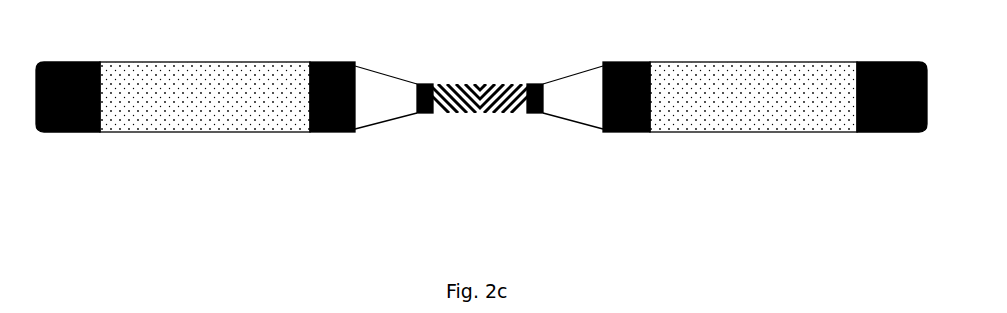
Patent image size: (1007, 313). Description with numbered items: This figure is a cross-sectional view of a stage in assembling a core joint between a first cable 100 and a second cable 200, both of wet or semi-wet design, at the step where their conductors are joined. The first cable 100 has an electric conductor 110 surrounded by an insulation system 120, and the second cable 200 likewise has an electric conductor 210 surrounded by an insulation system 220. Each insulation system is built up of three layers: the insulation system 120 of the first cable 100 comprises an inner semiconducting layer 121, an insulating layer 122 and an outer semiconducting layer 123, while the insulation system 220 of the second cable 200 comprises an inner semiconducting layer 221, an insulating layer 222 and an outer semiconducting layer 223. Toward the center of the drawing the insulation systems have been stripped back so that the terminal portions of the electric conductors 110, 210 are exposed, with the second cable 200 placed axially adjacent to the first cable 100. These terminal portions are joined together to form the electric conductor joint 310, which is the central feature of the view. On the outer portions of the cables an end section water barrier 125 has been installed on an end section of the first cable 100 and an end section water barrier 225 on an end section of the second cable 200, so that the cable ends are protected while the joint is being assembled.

The first cable 100 is at (171, 52).
The second cable 200 is at (807, 51).
The electric conductor joint 310 is at (430, 29).
The electric conductor 110 is at (453, 86).
The electric conductor 210 is at (510, 86).
The insulation system 120 is at (460, 167).
The insulation system 220 is at (638, 222).
The inner semiconducting layer 121 is at (423, 113).
The inner semiconducting layer 221 is at (533, 113).
The insulating layer 122 is at (388, 105).
The insulating layer 222 is at (577, 105).
The outer semiconducting layer 123 is at (327, 133).
The outer semiconducting layer 223 is at (627, 133).
The end section water barrier 125 is at (200, 133).
The end section water barrier 225 is at (763, 133).